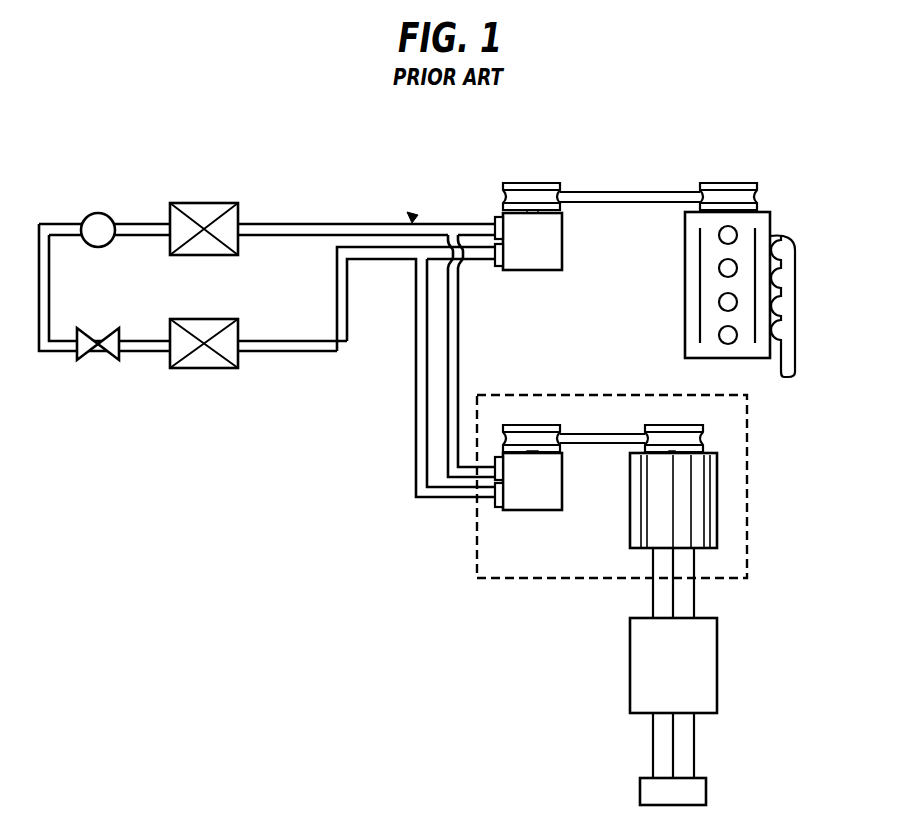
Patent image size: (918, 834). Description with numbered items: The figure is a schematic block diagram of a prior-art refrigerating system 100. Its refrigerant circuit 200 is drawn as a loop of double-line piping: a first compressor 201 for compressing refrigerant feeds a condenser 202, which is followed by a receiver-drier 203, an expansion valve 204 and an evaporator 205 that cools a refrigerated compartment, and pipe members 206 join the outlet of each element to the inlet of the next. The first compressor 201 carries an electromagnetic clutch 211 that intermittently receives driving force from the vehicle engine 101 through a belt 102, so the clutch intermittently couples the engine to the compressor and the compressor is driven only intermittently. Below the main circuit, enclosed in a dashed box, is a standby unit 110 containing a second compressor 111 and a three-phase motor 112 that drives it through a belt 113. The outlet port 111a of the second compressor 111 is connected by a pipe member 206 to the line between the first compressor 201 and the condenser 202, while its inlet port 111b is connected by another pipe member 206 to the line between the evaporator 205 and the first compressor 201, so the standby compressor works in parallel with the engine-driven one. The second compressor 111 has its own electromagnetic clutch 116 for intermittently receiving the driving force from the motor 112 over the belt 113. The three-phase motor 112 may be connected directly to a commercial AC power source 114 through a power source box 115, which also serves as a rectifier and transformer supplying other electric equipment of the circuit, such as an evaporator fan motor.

The refrigerating system 100 is at (414, 218).
The vehicle engine 101 is at (772, 226).
The belt 102 is at (670, 152).
The standby unit 110 is at (747, 438).
The second compressor 111 is at (523, 512).
The outlet port 111a is at (496, 460).
The inlet port 111b is at (497, 508).
The three-phase motor 112 is at (718, 505).
The belt 113 is at (608, 444).
The commercial AC power source 114 is at (706, 790).
The power source box 115 is at (718, 675).
The electromagnetic clutch 116 is at (533, 425).
The refrigerant circuit 200 is at (313, 222).
The first compressor 201 is at (543, 271).
The condenser 202 is at (212, 203).
The receiver-drier 203 is at (98, 213).
The expansion valve 204 is at (105, 359).
The evaporator 205 is at (202, 369).
The pipe members 206 is at (460, 318).
The electromagnetic clutch 211 is at (582, 144).